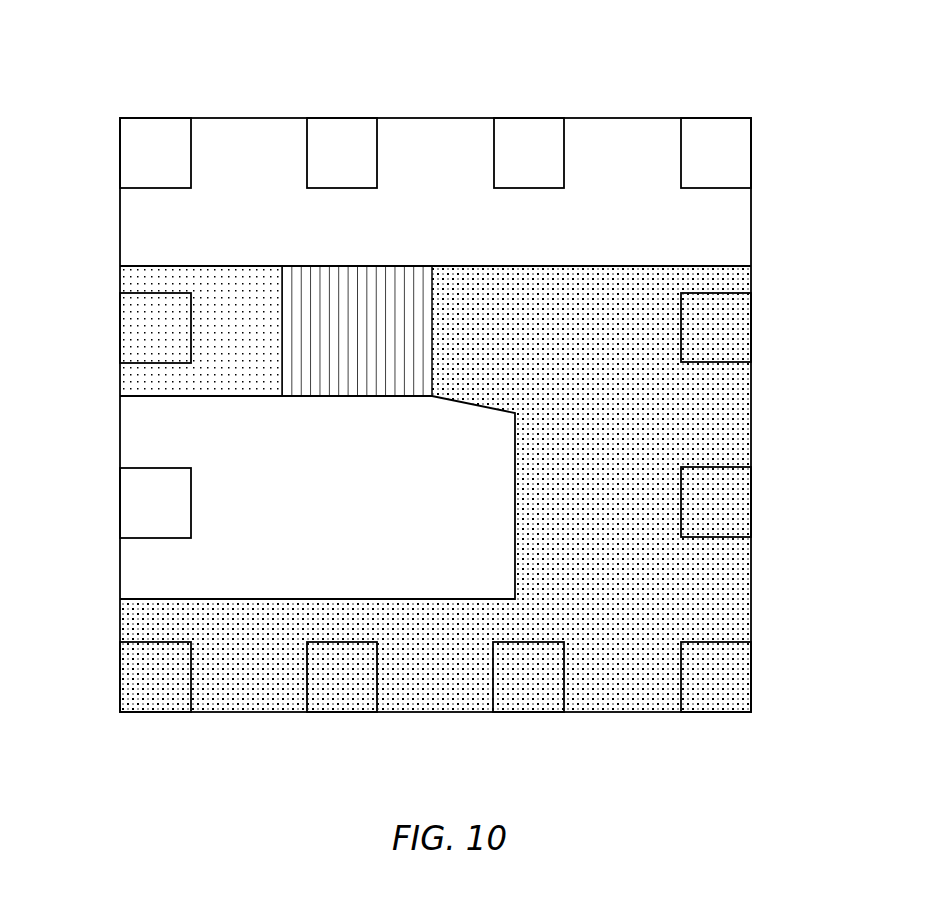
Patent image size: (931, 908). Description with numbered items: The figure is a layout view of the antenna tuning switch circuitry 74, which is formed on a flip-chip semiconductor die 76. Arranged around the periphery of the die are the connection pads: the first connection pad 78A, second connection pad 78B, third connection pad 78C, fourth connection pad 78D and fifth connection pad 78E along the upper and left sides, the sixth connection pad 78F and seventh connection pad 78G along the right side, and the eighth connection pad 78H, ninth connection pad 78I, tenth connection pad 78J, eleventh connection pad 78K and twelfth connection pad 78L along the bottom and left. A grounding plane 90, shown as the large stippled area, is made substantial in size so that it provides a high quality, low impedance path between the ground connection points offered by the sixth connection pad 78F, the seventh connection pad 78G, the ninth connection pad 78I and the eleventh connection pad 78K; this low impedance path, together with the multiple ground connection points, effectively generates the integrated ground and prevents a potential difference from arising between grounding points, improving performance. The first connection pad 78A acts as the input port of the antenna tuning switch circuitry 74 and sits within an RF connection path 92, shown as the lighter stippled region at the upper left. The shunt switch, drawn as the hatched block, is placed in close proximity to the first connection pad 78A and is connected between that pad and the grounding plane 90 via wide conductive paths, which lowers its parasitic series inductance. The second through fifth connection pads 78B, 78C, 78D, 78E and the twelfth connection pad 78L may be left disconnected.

The antenna tuning switch circuitry 74 is at (440, 60).
The flip-chip semiconductor die 76 is at (662, 118).
The first connection pad 78A is at (155, 328).
The second connection pad 78B is at (155, 153).
The third connection pad 78C is at (342, 153).
The fourth connection pad 78D is at (529, 153).
The fifth connection pad 78E is at (716, 153).
The sixth connection pad 78F is at (716, 327).
The seventh connection pad 78G is at (716, 502).
The eighth connection pad 78H is at (716, 677).
The ninth connection pad 78I is at (528, 677).
The tenth connection pad 78J is at (342, 677).
The eleventh connection pad 78K is at (155, 677).
The twelfth connection pad 78L is at (155, 503).
The grounding plane 90 is at (733, 420).
The RF connection path 92 is at (133, 382).